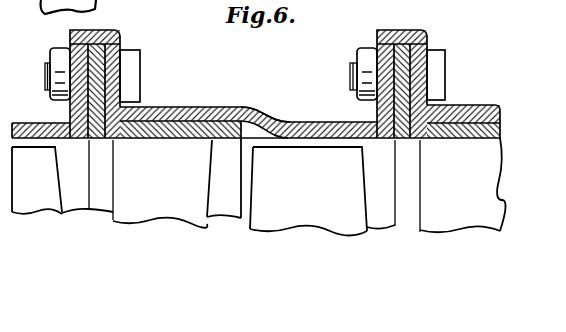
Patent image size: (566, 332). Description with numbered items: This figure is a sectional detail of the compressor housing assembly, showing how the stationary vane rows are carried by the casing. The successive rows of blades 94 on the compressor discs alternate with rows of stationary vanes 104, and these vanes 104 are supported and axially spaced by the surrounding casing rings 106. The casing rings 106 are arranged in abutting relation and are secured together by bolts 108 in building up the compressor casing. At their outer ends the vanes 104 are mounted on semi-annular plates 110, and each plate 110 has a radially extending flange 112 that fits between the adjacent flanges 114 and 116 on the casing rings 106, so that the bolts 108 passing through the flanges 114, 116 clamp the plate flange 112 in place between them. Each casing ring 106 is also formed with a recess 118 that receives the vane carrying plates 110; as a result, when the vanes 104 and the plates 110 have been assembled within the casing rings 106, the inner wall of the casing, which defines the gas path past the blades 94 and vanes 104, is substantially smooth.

The blades 94 is at (33, 208).
The stationary vanes 104 is at (153, 208).
The casing rings 106 is at (168, 108).
The bolts 108 is at (137, 72).
The semi-annular plates 110 is at (147, 140).
The radially extending flange 112 is at (420, 90).
The flange 114 is at (377, 53).
The flange 116 is at (442, 53).
The recess 118 is at (247, 125).